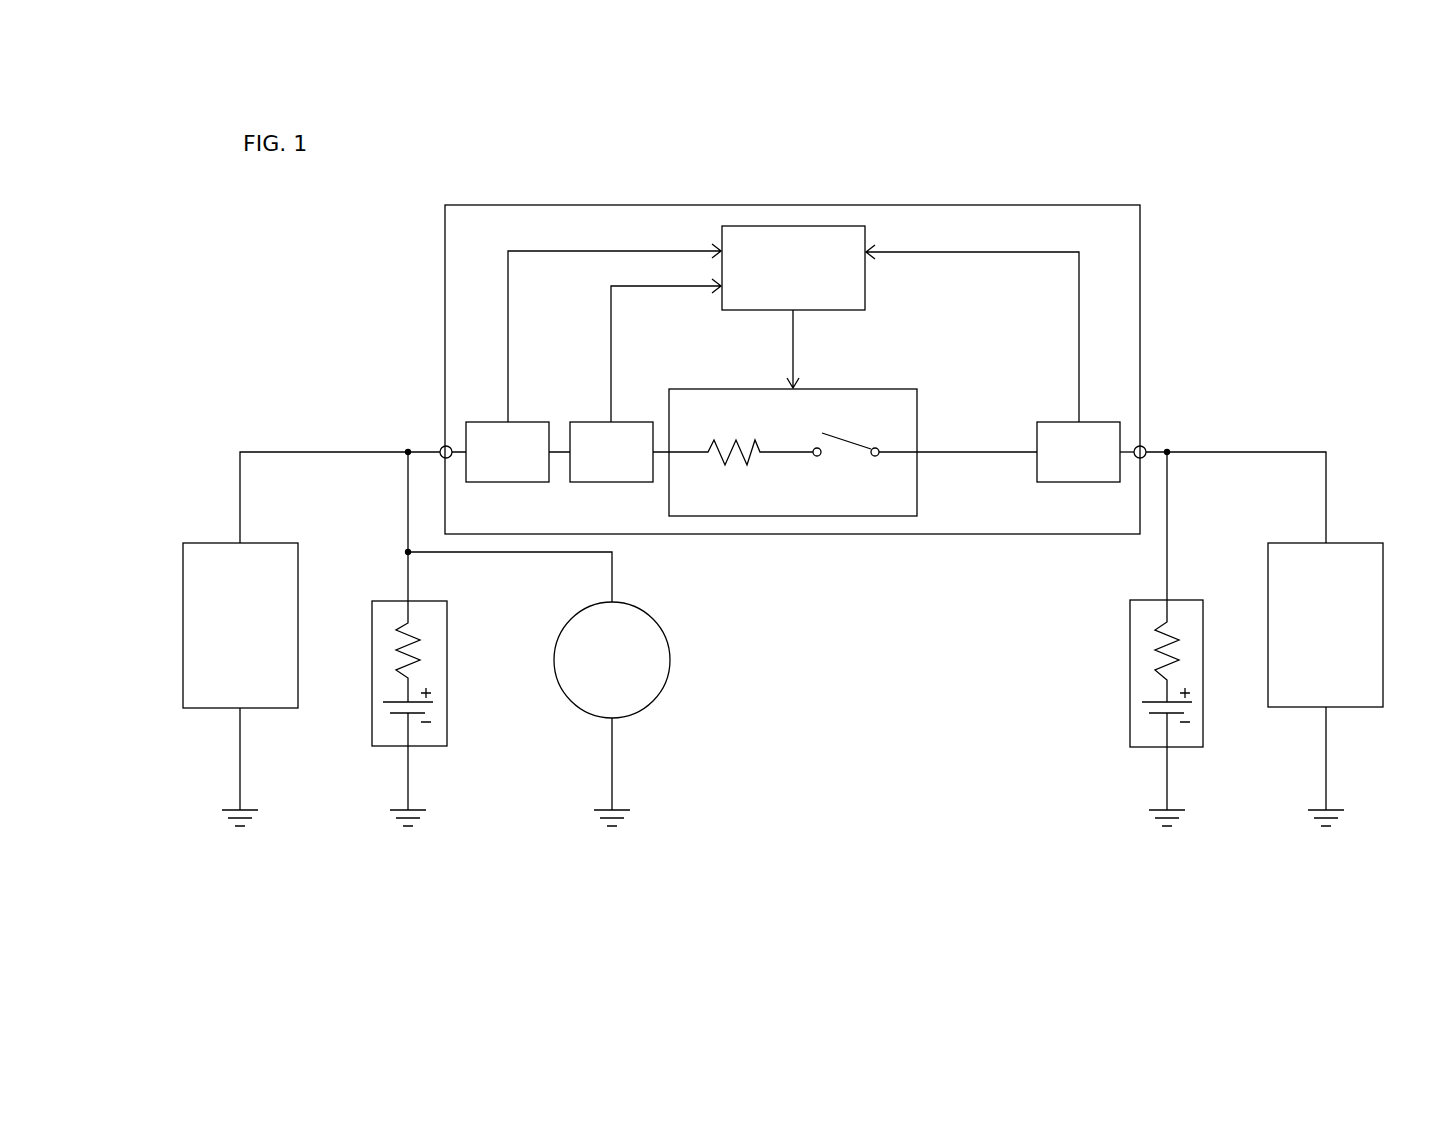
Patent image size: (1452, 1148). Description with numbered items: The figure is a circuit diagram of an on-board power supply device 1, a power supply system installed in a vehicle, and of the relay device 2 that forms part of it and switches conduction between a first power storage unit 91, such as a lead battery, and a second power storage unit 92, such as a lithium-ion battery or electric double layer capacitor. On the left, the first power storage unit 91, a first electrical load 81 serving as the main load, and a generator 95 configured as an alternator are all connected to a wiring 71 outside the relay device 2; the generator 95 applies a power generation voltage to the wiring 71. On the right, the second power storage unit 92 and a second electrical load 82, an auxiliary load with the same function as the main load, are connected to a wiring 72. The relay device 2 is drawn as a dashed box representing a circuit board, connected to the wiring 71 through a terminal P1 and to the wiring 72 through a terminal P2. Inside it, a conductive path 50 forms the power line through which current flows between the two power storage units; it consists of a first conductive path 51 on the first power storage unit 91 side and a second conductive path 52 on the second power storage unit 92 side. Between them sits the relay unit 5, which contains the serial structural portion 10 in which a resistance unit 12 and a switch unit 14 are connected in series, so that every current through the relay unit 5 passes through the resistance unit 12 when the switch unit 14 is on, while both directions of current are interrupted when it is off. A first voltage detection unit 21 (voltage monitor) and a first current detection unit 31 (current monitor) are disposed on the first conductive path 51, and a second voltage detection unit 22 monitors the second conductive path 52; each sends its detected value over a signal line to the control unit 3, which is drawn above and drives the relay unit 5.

The on-board power supply device 1 is at (1298, 279).
The relay device 2 is at (1140, 237).
The control unit 3 is at (865, 235).
The relay unit 5 is at (855, 389).
The serial structural portion 10 is at (764, 406).
The resistance unit 12 is at (746, 463).
The switch unit 14 is at (849, 440).
The first voltage detection unit 21 is at (530, 422).
The second voltage detection unit 22 is at (1056, 422).
The first current detection unit 31 is at (622, 422).
The conductive path 50 is at (793, 447).
The first conductive path 51 is at (660, 457).
The second conductive path 52 is at (1127, 457).
The wiring 71 is at (371, 452).
The wiring 72 is at (1225, 452).
The first electrical load 81 is at (183, 678).
The second electrical load 82 is at (1384, 680).
The first power storage unit 91 is at (372, 718).
The second power storage unit 92 is at (1203, 720).
The generator 95 is at (575, 705).
The terminal P1 is at (448, 445).
The terminal P2 is at (1148, 446).